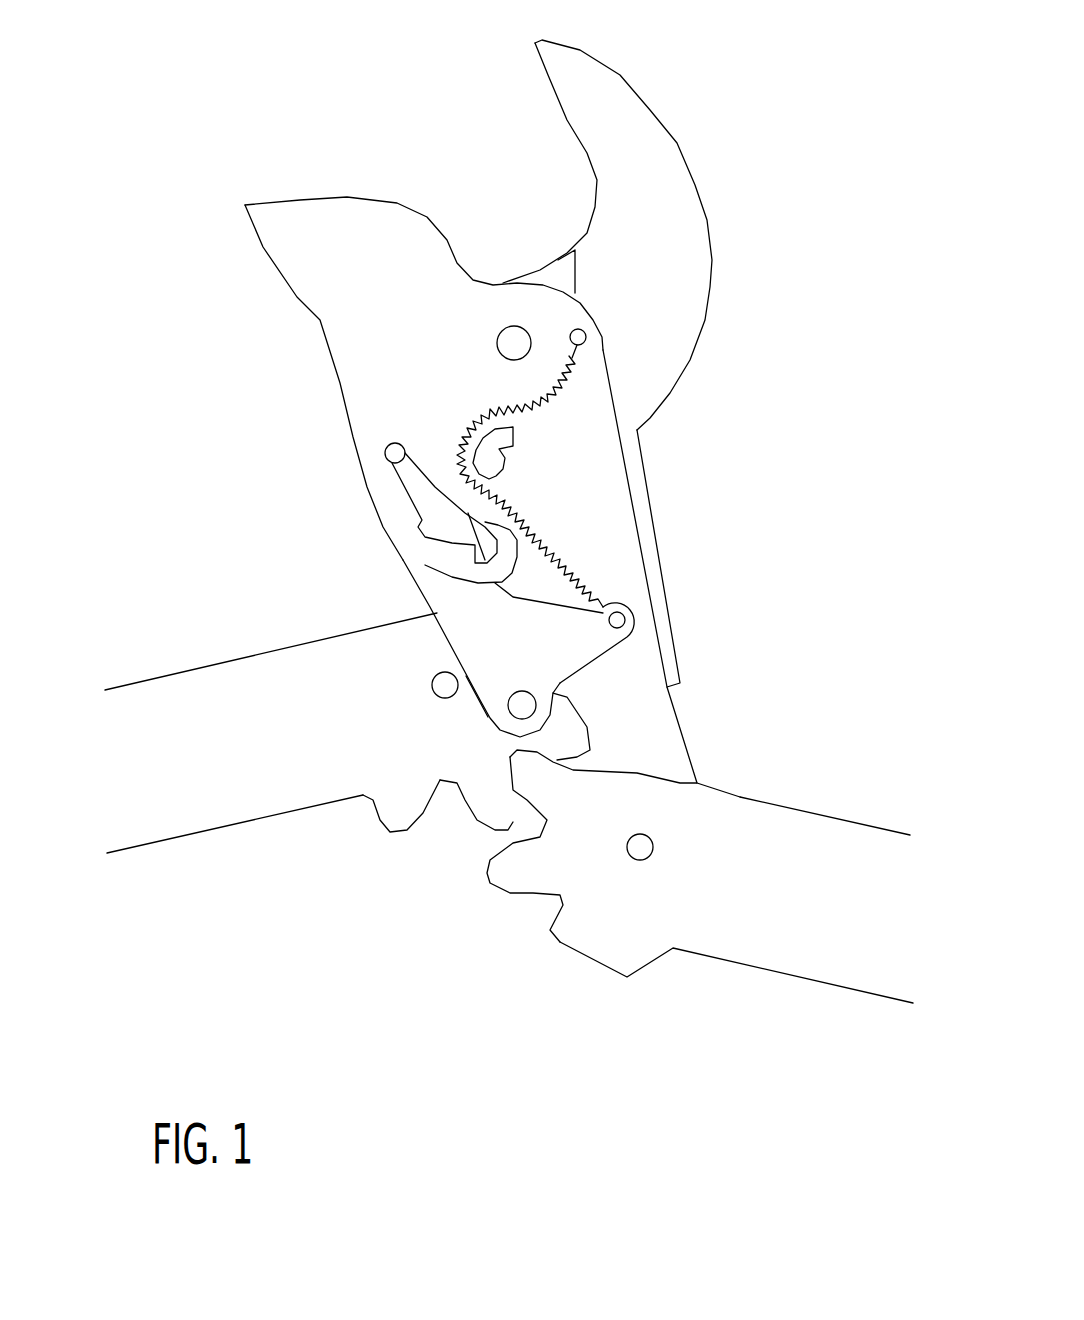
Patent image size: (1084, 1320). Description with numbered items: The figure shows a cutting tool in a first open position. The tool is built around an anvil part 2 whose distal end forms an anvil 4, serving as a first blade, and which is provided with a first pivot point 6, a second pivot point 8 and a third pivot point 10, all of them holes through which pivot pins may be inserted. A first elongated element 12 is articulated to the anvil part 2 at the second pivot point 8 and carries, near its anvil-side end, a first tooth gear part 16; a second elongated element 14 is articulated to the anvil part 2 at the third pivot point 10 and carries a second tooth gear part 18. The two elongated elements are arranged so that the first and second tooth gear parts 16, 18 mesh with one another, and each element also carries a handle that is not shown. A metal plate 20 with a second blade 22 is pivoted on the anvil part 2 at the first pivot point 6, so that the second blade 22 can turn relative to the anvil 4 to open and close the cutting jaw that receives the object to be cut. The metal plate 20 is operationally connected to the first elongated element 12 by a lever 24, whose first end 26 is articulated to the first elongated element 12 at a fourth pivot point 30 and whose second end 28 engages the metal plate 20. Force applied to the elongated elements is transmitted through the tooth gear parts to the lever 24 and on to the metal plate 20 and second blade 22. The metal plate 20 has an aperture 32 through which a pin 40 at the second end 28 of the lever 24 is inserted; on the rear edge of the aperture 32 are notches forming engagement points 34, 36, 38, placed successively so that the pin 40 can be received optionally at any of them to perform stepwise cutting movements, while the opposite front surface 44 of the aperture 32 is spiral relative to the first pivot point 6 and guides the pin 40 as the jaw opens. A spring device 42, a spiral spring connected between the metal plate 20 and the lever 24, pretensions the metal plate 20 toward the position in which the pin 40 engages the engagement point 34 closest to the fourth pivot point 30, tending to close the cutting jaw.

The anvil part 2 is at (602, 520).
The anvil 4 is at (648, 157).
The first pivot point 6 is at (514, 343).
The second pivot point 8 is at (445, 698).
The third pivot point 10 is at (640, 860).
The first elongated element 12 is at (195, 797).
The second elongated element 14 is at (833, 945).
The first tooth gear part 16 is at (408, 807).
The second tooth gear part 18 is at (520, 872).
The metal plate 20 is at (377, 393).
The second blade 22 is at (377, 220).
The lever 24 is at (463, 600).
The first end 26 is at (540, 707).
The second end 28 is at (440, 470).
The fourth pivot point 30 is at (565, 688).
The aperture 32 is at (517, 540).
The engagement point 34 is at (425, 563).
The engagement point 36 is at (418, 527).
The engagement point 38 is at (386, 449).
The pin 40 is at (385, 453).
The spring device 42 is at (557, 402).
The front surface 44 is at (437, 477).